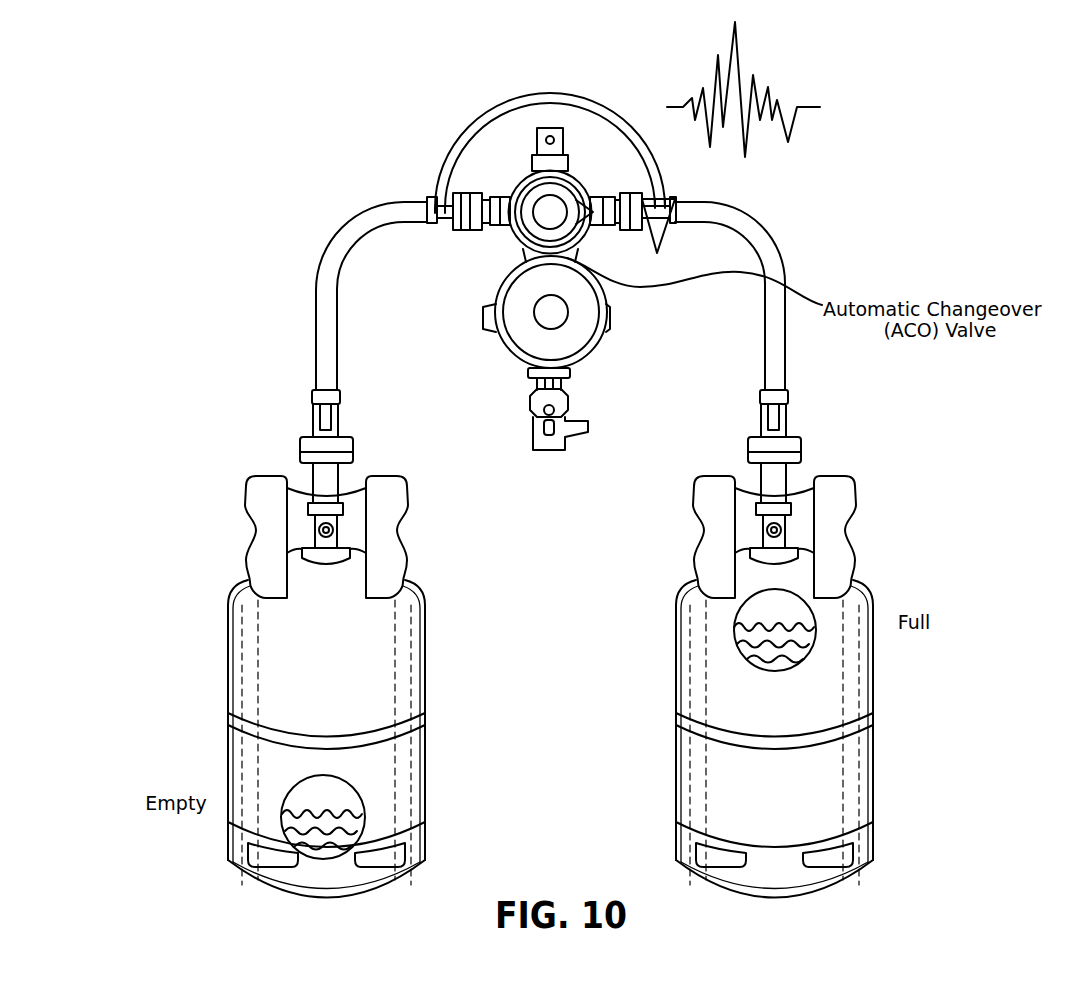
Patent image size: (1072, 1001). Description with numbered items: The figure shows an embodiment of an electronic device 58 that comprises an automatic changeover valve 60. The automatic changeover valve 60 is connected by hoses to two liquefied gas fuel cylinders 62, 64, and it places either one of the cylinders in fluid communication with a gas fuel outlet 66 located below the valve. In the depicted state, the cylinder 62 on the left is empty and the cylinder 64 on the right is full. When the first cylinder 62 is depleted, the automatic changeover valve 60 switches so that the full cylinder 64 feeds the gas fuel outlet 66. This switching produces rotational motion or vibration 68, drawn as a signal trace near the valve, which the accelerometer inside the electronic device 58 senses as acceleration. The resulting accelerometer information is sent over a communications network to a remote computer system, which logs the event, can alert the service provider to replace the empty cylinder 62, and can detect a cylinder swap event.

The electronic device 58 is at (482, 156).
The automatic changeover valve 60 is at (565, 190).
The liquefied gas fuel cylinder 62 is at (228, 612).
The liquefied gas fuel cylinder 64 is at (873, 760).
The gas fuel outlet 66 is at (573, 416).
The rotational motion or vibration 68 is at (793, 127).